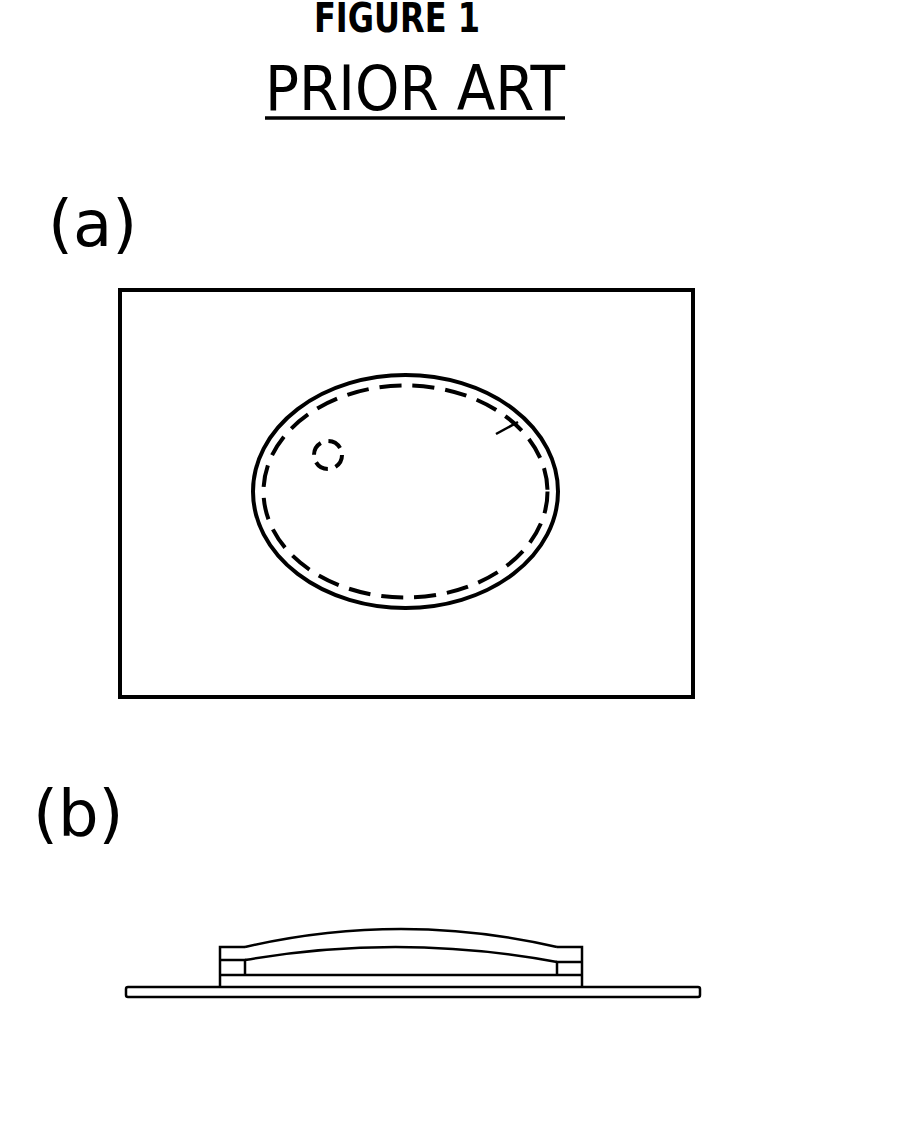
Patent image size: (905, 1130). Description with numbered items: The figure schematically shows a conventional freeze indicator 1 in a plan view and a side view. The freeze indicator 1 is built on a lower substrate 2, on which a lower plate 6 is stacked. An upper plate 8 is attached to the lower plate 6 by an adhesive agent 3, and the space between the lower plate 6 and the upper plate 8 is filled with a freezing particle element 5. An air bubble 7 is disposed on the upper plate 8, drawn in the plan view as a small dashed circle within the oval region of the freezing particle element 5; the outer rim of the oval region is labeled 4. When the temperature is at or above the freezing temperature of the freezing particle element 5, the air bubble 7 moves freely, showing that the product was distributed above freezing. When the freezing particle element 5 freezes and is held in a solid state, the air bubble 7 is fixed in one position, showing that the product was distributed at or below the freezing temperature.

The freeze indicator 1 is at (712, 335).
The lower substrate 2 is at (631, 637).
The adhesive agent 3 is at (411, 380).
The outer frame 4 is at (560, 492).
The freezing particle element 5 is at (422, 503).
The lower plate 6 is at (381, 982).
The air bubble 7 is at (318, 458).
The upper plate 8 is at (502, 432).